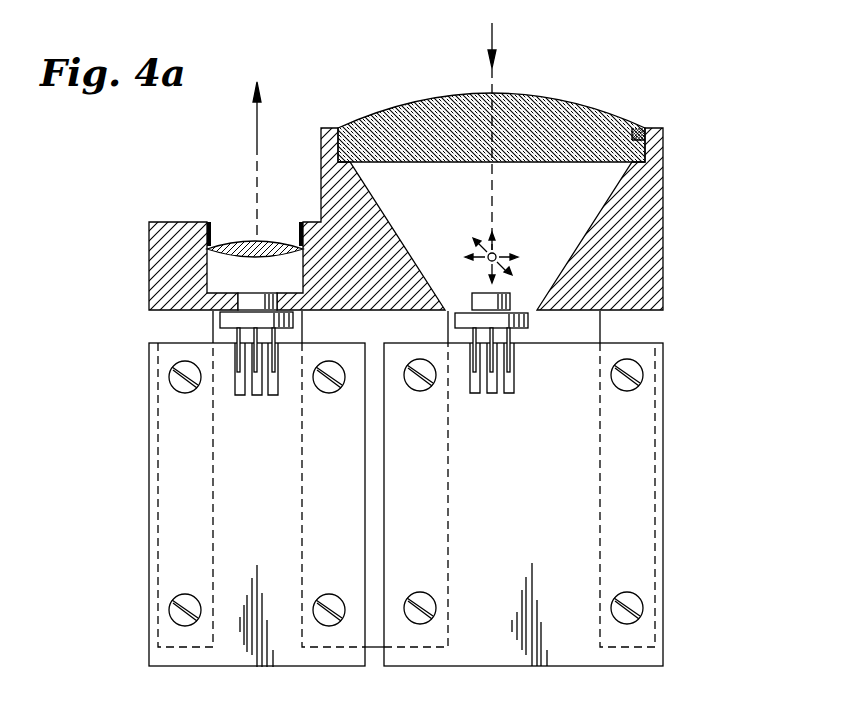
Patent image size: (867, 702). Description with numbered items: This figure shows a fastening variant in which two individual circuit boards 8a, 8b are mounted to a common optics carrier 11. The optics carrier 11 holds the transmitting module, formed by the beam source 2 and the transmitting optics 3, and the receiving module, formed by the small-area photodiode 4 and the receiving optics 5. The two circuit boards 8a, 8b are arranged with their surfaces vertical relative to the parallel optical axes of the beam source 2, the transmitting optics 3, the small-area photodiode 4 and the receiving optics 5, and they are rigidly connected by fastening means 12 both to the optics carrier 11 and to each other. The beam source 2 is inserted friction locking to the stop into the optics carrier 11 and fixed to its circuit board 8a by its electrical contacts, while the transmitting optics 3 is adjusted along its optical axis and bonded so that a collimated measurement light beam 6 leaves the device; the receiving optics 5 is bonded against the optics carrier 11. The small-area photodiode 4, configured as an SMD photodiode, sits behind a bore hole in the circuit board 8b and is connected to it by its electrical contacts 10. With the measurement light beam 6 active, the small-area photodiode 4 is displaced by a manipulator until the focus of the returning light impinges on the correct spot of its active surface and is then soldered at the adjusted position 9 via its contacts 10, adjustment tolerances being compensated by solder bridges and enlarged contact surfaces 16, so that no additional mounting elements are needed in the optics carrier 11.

The beam source 2 is at (232, 320).
The transmitting optics 3 is at (287, 245).
The small-area photodiode 4 is at (528, 322).
The receiving optics 5 is at (588, 118).
The measurement light beam 6 is at (257, 128).
The circuit board 8a is at (235, 548).
The circuit board 8b is at (585, 520).
The adjusted position 9 is at (500, 250).
The electrical contacts 10 is at (278, 365).
The optics carrier 11 is at (663, 228).
The fastening means 12 is at (172, 385).
The enlarged contact surfaces 16 is at (257, 392).